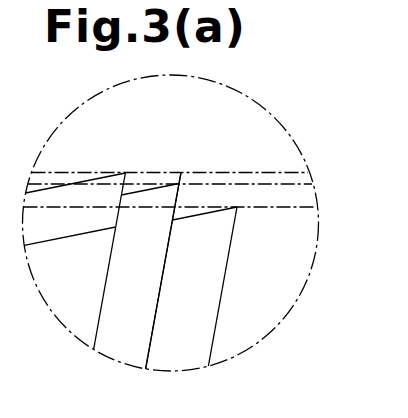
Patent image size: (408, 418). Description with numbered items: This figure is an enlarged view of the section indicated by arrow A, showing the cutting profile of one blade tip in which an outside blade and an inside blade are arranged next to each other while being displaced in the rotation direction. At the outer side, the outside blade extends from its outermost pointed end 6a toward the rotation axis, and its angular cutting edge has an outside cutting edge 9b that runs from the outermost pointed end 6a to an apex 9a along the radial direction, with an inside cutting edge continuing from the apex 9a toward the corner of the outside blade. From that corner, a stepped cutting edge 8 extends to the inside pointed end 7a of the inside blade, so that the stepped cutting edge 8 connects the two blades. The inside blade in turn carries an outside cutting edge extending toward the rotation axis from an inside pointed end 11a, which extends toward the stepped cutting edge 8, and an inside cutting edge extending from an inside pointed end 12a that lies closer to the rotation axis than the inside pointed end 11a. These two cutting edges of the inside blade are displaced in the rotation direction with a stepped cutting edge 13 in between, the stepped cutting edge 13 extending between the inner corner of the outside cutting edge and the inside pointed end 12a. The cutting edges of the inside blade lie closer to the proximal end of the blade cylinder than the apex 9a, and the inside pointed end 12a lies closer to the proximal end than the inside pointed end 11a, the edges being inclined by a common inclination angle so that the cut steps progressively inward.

The arrow A section A is at (259, 103).
The apex 9a is at (126, 172).
The stepped cutting edge 8 is at (140, 183).
The inside pointed end 11a is at (181, 173).
The inside pointed end 7a is at (208, 250).
The outside cutting edge 9b is at (118, 210).
The outermost pointed end 6a is at (116, 222).
The stepped cutting edge 13 is at (190, 219).
The inside pointed end 12a is at (237, 208).